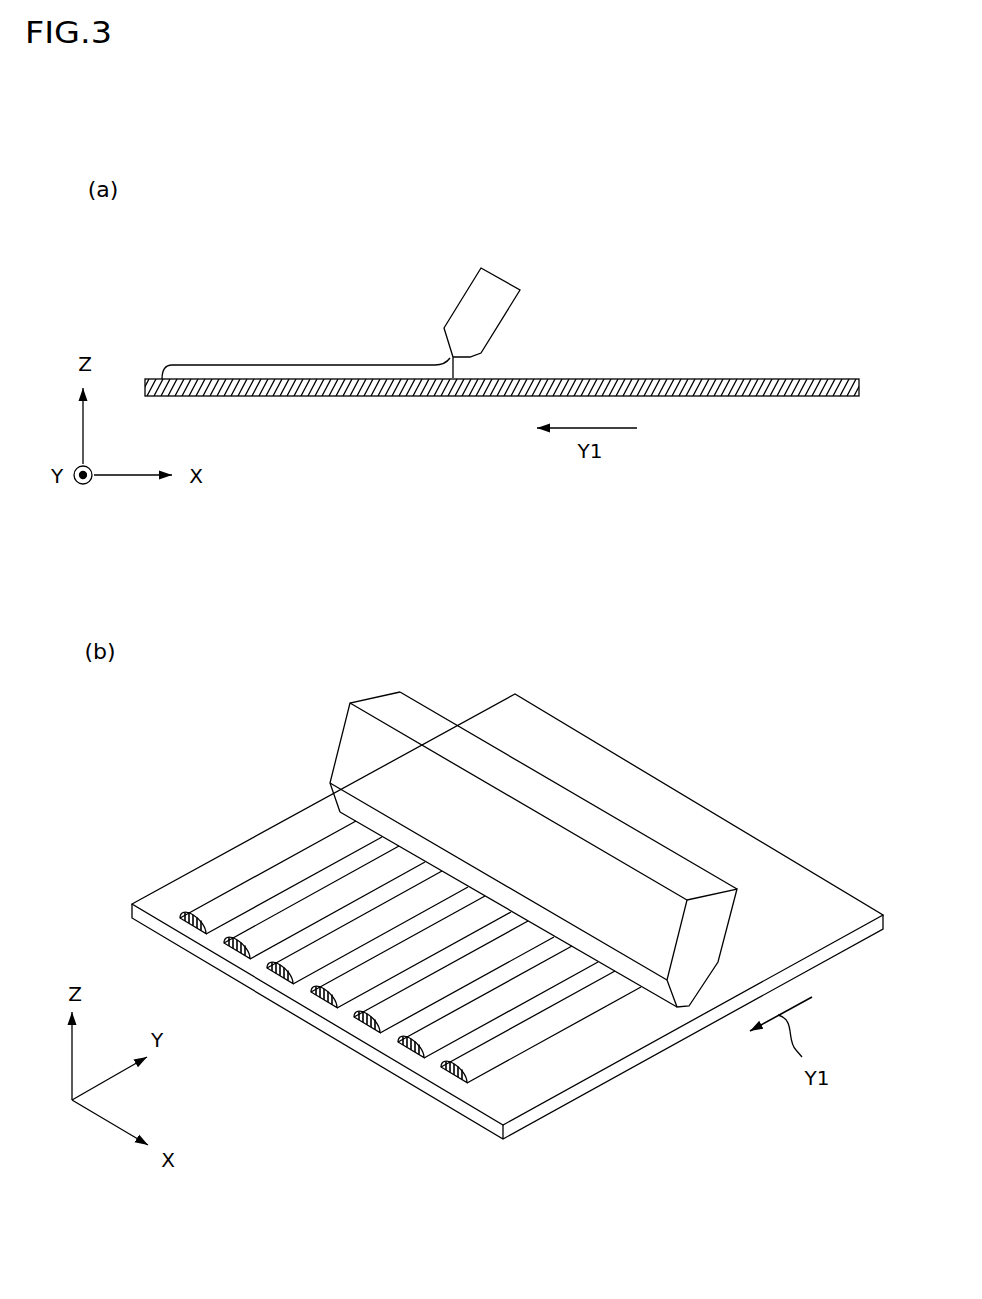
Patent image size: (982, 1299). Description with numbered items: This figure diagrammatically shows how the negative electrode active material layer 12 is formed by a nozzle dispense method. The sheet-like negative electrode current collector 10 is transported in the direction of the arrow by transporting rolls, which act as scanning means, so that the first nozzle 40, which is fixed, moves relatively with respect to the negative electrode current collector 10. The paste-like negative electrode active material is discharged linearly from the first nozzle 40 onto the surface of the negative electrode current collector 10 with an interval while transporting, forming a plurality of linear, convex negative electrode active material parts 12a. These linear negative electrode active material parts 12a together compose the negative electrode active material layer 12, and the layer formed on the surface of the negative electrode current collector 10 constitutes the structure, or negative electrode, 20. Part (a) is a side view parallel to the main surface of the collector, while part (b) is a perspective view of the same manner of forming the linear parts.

The negative electrode current collector 10 is at (737, 380).
The negative electrode active material layer 12 is at (257, 937).
The linear negative electrode active material parts 12a is at (383, 372).
The first nozzle 40 is at (470, 310).
The structure (negative electrode) 20 is at (675, 1058).